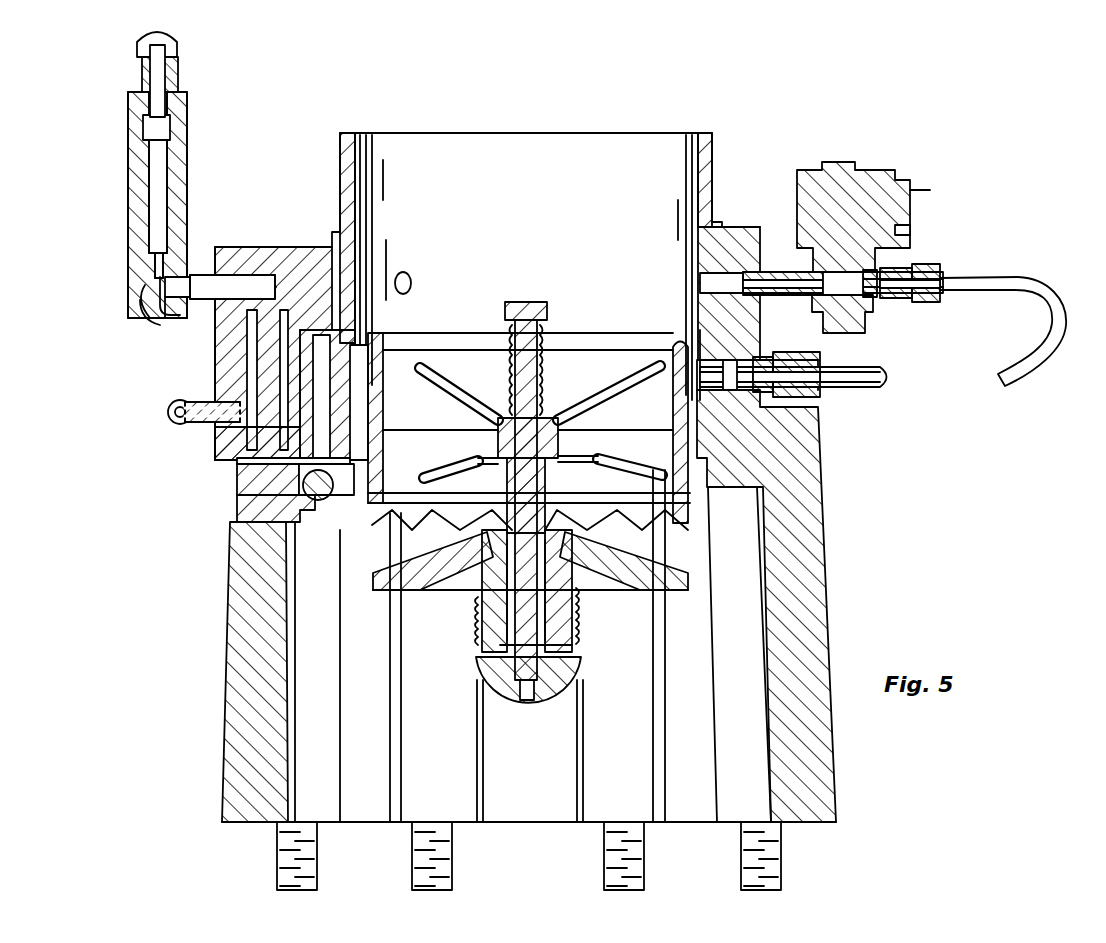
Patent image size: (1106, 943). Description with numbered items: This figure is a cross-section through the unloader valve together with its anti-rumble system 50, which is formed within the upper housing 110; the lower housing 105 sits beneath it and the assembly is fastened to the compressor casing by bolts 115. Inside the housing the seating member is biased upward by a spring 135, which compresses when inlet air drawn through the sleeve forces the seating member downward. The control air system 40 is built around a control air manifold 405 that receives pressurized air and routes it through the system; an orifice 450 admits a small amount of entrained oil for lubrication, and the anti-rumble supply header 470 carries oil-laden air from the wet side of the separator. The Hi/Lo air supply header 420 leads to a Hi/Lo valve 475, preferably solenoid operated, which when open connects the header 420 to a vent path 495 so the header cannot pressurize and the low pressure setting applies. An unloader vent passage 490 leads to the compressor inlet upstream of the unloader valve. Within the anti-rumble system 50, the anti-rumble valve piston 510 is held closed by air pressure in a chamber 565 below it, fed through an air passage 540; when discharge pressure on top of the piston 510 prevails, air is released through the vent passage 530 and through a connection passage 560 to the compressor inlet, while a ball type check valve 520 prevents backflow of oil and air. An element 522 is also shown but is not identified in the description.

The control air system 40 is at (166, 62).
The control air manifold 405 is at (190, 132).
The upper housing 110 is at (343, 133).
The Hi/Lo valve 475 is at (843, 170).
The vent path 495 is at (778, 272).
The Hi/Lo air supply header 420 is at (988, 292).
The orifice 450 is at (160, 272).
The anti-rumble supply header 470 is at (165, 318).
The vent passage 530 is at (356, 290).
The connection passage 560 is at (388, 362).
The anti-rumble system 50 is at (80, 395).
The air passage 540 is at (210, 430).
The anti-rumble valve piston 510 is at (240, 462).
The chamber 565 is at (295, 478).
The block 522 is at (247, 522).
The check valve 520 is at (320, 502).
The unloader vent passage 490 is at (850, 388).
The spring 135 is at (476, 618).
The lower housing 105 is at (228, 778).
The bolts 115 is at (782, 850).